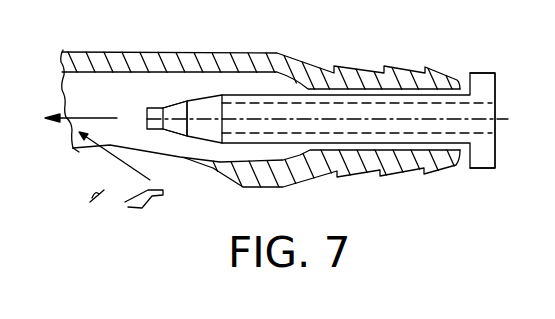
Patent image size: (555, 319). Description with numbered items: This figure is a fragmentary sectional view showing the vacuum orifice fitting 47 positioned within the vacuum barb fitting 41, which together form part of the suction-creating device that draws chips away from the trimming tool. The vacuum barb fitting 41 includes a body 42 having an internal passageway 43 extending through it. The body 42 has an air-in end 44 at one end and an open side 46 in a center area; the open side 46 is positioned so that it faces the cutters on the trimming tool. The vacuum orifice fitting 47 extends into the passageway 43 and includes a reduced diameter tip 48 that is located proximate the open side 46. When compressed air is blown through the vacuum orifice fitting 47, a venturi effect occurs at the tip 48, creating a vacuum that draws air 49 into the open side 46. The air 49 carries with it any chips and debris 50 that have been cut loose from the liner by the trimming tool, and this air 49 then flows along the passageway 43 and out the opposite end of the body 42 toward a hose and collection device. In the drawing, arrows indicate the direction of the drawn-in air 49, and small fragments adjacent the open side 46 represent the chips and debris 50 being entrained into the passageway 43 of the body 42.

The vacuum barb fitting 41 is at (176, 51).
The body 42 is at (276, 120).
The internal passageway 43 is at (112, 93).
The air-in end 44 is at (455, 173).
The open side 46 is at (80, 151).
The vacuum orifice fitting 47 is at (496, 73).
The reduced diameter tip 48 is at (183, 101).
The air 49 is at (133, 167).
The chips and debris 50 is at (90, 202).